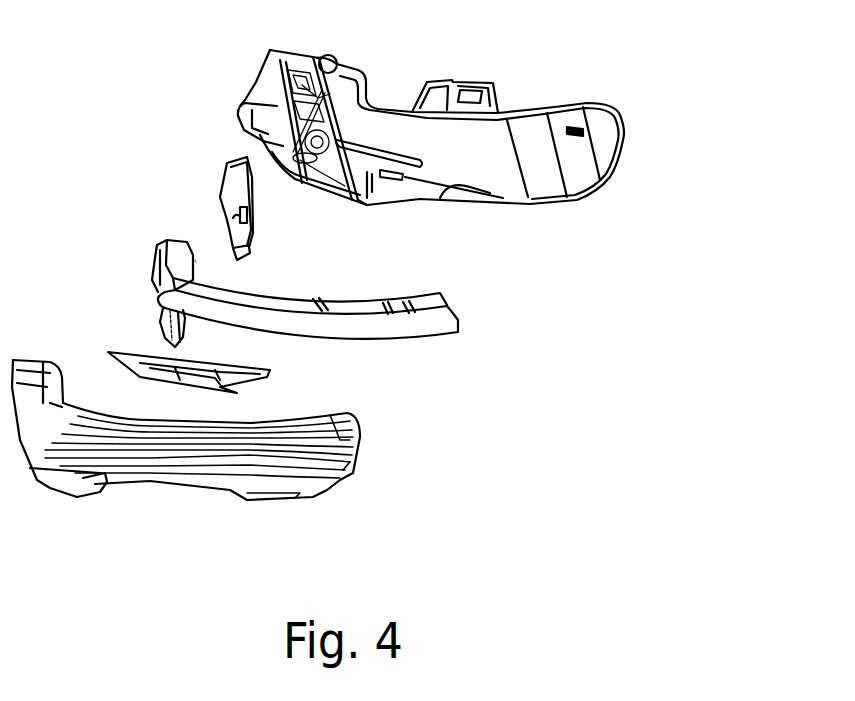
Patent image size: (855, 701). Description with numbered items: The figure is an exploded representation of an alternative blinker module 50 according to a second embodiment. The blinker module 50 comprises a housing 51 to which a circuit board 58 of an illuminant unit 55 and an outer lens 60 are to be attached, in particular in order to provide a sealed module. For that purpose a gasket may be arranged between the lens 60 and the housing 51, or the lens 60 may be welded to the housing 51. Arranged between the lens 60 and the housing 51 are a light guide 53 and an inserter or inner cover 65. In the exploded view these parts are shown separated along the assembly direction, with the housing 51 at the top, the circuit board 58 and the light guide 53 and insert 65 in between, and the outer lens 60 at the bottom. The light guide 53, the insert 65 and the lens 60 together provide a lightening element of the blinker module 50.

The blinker module 50 is at (652, 319).
The housing 51 is at (625, 110).
The light guide 53 is at (460, 322).
The illuminant unit 55 is at (190, 205).
The circuit board 58 is at (222, 170).
The outer lens 60 is at (340, 490).
The inserter or inner cover 65 is at (120, 355).